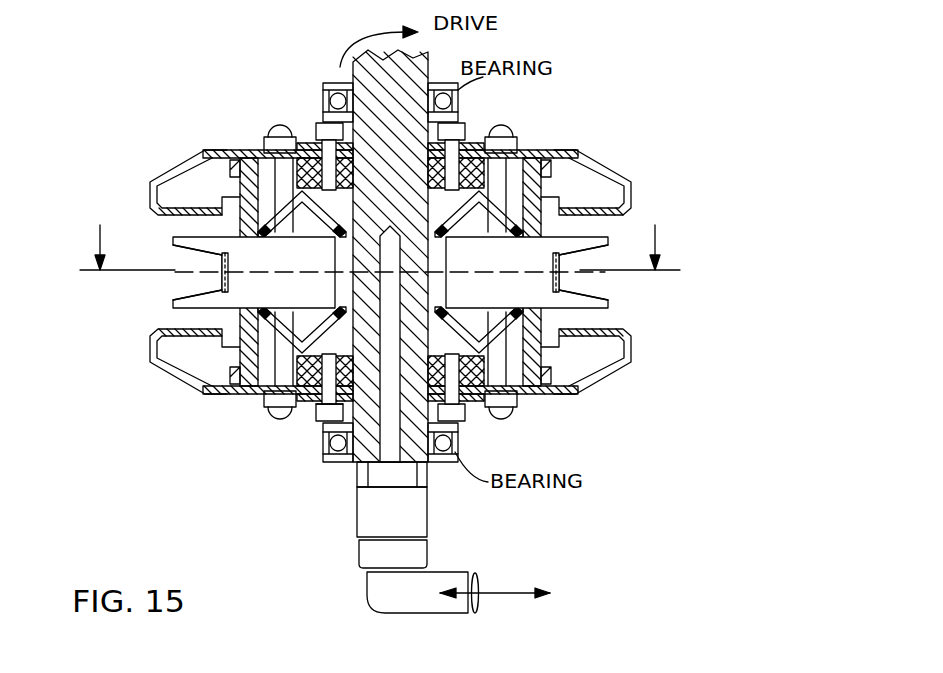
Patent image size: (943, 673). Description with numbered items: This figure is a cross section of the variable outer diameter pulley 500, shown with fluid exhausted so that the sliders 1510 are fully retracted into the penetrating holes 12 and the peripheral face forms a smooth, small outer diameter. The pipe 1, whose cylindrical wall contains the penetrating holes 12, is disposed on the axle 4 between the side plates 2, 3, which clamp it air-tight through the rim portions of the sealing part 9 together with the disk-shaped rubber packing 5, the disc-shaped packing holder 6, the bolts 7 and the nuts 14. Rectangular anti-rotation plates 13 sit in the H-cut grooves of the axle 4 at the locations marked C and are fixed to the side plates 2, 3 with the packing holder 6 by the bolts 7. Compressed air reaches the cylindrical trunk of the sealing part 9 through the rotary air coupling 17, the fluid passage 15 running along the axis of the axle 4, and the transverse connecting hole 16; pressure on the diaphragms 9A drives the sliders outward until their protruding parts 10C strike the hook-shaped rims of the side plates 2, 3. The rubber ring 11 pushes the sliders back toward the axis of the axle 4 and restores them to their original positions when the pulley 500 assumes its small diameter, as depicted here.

The variable outer diameter pulley 500 is at (160, 160).
The pipe 1 is at (249, 185).
The side plate 2 is at (203, 152).
The side plate 3 is at (150, 350).
The axle 4 is at (345, 438).
The rubber packing 5 is at (345, 140).
The packing holder 6 is at (286, 145).
The bolt 7 is at (283, 405).
The sealing part 9 is at (230, 360).
The diaphragm 9A is at (320, 212).
The protruding part 10C is at (567, 190).
The rubber ring 11 is at (220, 268).
The penetrating hole 12 is at (258, 348).
The anti-rotation plate 13 is at (468, 133).
The nut 14 is at (516, 140).
The fluid passage 15 is at (388, 412).
The transverse connecting hole 16 is at (262, 395).
The rotary air coupling 17 is at (412, 507).
The slider 1510 is at (180, 298).
The H-cut groove location C is at (350, 408).